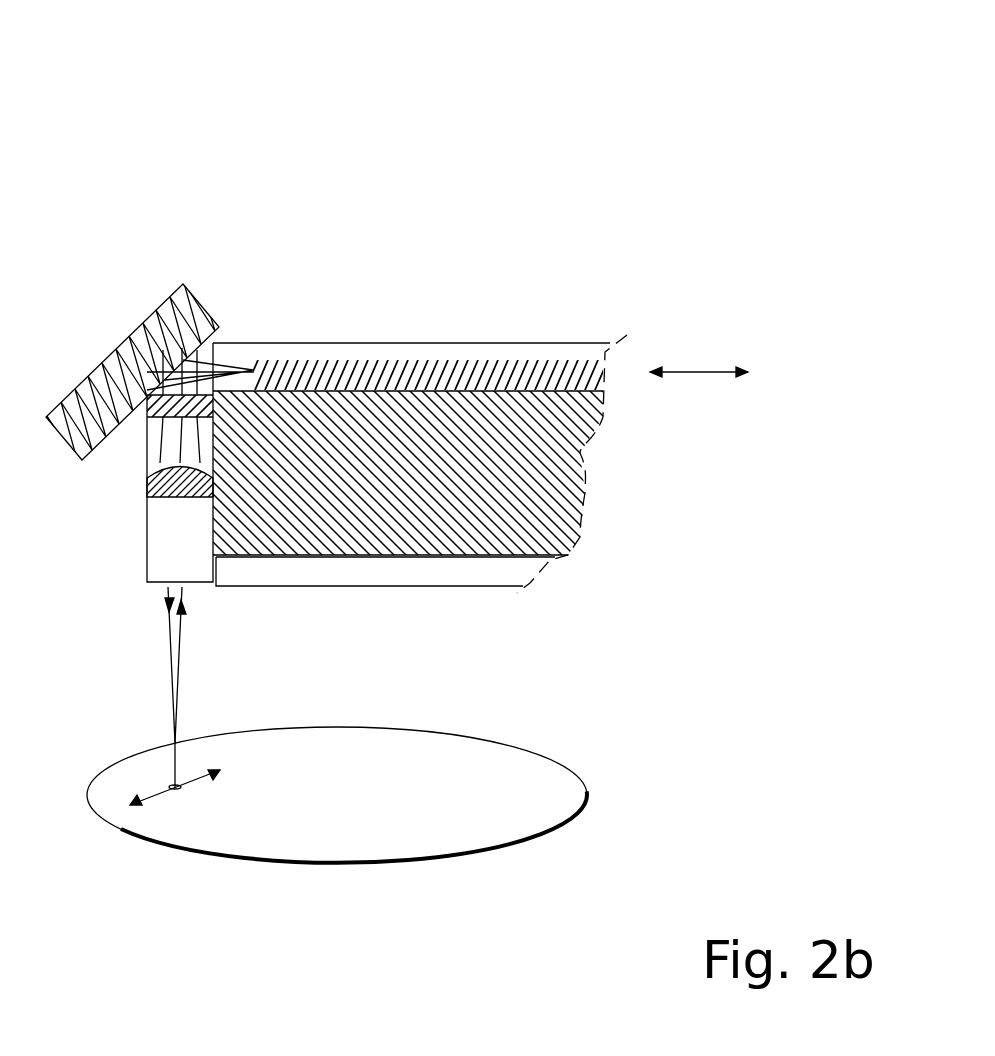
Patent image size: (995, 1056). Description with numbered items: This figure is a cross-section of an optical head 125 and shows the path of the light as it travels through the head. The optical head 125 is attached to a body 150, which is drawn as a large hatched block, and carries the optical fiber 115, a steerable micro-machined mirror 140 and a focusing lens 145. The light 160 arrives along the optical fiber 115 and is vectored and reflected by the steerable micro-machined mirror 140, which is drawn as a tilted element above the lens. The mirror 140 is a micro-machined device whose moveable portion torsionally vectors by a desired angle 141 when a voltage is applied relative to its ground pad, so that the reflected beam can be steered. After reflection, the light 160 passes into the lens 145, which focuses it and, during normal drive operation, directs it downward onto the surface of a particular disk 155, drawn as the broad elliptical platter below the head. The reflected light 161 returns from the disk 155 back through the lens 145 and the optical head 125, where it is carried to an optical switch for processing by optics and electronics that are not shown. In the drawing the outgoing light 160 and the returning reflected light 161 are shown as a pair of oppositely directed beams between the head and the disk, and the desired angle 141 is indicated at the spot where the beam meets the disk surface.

The optical head 125 is at (612, 118).
The steerable micro-machined mirror 140 is at (115, 346).
The optical fiber 115 is at (415, 362).
The body 150 is at (572, 480).
The focusing lens 145 is at (148, 490).
The light 160 is at (168, 662).
The reflected light 161 is at (183, 662).
The disk 155 is at (547, 770).
The desired angle 141 is at (153, 793).